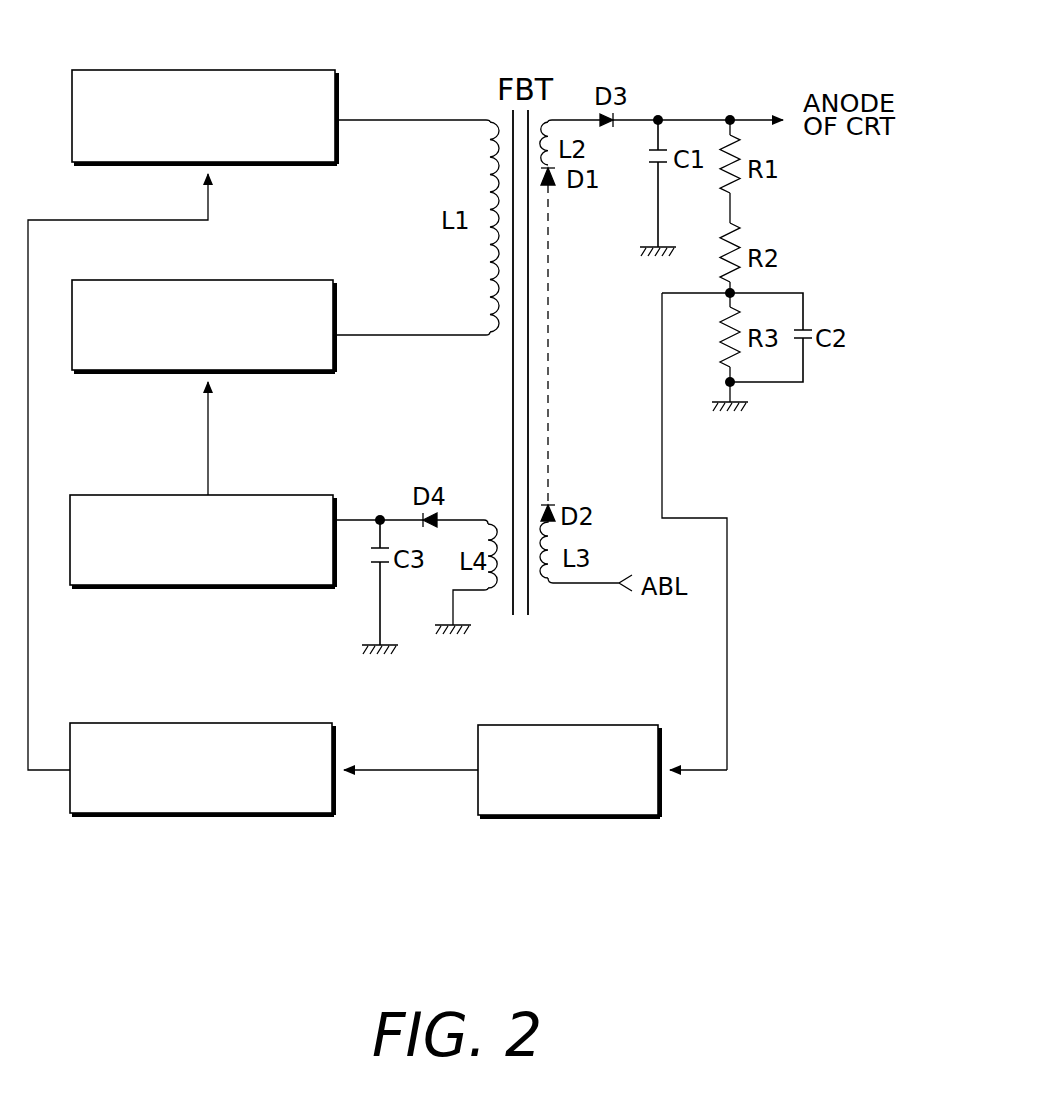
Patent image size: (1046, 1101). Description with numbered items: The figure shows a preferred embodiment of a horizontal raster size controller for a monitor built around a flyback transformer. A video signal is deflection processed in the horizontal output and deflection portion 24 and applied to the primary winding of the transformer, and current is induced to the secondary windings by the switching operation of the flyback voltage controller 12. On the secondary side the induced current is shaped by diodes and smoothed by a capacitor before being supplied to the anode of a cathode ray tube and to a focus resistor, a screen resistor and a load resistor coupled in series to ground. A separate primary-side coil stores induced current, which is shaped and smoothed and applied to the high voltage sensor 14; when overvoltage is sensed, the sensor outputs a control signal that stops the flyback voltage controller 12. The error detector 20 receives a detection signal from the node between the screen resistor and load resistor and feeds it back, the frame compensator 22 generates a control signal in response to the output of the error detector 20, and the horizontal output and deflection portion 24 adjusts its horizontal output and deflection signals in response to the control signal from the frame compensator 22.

The horizontal output and deflection portion 24 is at (262, 70).
The flyback voltage controller 12 is at (263, 280).
The high voltage sensor 14 is at (263, 495).
The frame compensator 22 is at (263, 723).
The error detector 20 is at (598, 725).